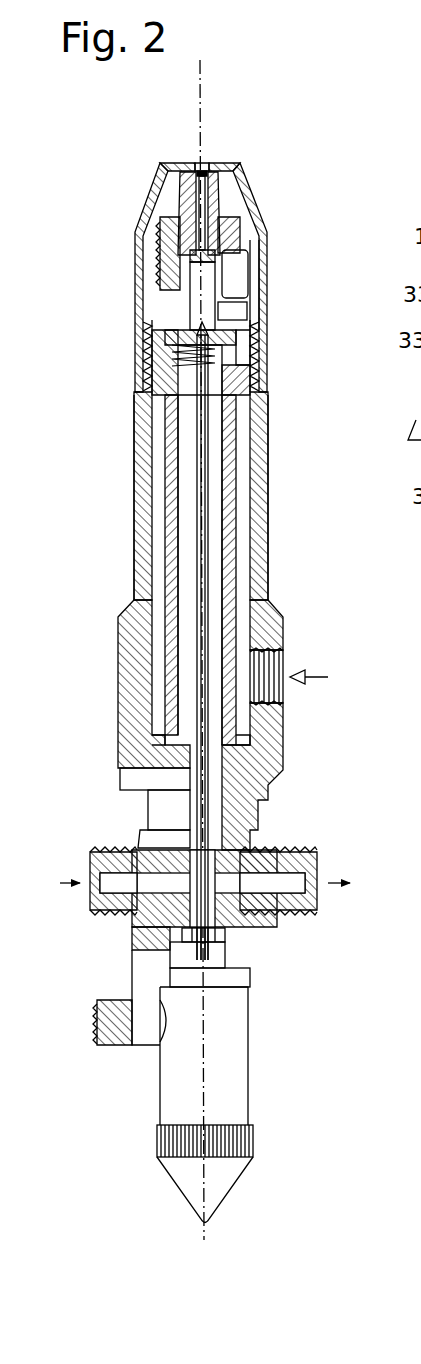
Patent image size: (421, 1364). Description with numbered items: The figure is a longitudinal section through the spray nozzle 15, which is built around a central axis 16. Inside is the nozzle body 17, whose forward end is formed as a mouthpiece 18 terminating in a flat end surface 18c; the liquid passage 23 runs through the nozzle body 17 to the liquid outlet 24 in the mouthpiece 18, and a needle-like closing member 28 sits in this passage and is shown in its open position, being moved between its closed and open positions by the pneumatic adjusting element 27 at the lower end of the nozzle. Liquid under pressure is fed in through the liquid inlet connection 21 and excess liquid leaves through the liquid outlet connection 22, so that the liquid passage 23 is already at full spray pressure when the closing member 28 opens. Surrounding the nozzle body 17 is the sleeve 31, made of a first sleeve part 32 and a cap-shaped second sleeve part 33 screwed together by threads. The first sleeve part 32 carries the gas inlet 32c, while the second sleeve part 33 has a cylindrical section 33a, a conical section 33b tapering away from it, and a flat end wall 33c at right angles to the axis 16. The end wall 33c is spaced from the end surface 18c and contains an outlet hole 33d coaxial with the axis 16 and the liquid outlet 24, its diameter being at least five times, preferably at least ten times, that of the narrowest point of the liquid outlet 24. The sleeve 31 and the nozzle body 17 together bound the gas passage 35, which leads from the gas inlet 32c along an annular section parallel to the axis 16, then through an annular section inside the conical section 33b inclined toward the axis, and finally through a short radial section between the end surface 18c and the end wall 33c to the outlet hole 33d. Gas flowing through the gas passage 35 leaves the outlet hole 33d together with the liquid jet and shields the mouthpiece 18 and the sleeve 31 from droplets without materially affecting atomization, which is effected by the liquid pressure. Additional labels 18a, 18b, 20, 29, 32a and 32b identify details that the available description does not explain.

The spray nozzle 15 is at (133, 535).
The axis 16 is at (203, 84).
The nozzle body 17 is at (165, 493).
The mouthpiece 18 is at (148, 234).
The plug insert 18a is at (163, 216).
The plug collar 18b is at (183, 183).
The end surface 18c is at (180, 163).
The connection body 20 is at (140, 848).
The liquid inlet connection 21 is at (88, 862).
The liquid outlet connection 22 is at (318, 862).
The liquid passage 23 is at (186, 440).
The liquid outlet 24 is at (199, 163).
The pneumatic adjusting element 27 is at (160, 1078).
The needle-like closing member 28 is at (212, 957).
The knurled cap 29 is at (153, 1113).
The sleeve 31 is at (134, 413).
The first sleeve part 32 is at (216, 621).
The outer tube lower portion 32a is at (284, 757).
The outer tube upper portion 32b is at (268, 508).
The gas inlet 32c is at (285, 660).
The second sleeve part 33 is at (208, 250).
The cylindrical section 33a is at (268, 263).
The conical section 33b is at (252, 192).
The end wall 33c is at (230, 163).
The outlet hole 33d is at (206, 163).
The gas passage 35 is at (247, 566).